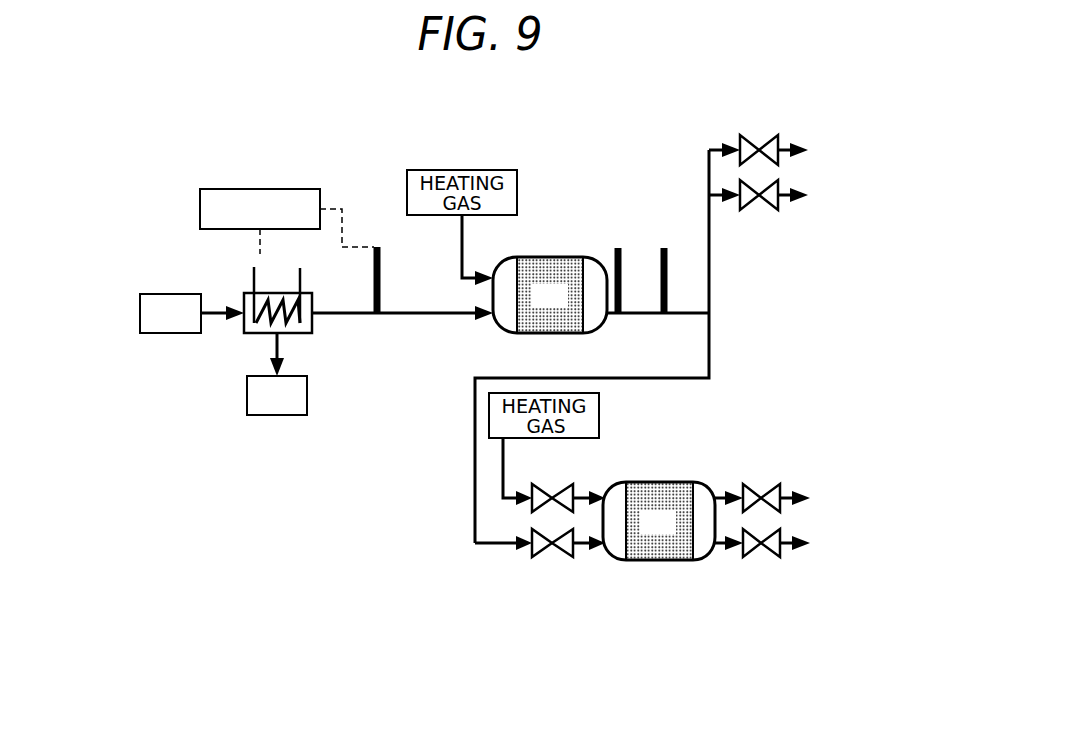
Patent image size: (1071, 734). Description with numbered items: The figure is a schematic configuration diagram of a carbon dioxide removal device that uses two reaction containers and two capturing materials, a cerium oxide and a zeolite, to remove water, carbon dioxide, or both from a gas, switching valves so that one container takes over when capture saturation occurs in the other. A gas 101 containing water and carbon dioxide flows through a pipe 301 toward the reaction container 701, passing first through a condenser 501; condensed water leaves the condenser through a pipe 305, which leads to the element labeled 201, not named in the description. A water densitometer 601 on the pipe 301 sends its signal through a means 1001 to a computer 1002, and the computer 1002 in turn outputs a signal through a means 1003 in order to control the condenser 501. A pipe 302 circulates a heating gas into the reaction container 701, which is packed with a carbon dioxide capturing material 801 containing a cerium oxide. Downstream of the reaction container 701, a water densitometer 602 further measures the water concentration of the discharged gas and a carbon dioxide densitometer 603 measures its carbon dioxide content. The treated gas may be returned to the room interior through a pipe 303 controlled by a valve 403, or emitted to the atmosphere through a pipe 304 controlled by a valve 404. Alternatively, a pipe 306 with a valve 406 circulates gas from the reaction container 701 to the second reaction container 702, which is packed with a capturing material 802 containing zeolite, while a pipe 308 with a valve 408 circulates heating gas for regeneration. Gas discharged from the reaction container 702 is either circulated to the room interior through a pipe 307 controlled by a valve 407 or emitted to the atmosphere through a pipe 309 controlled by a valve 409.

The gas 101 is at (192, 313).
The condensate discharge destination 201 is at (277, 395).
The pipe 301 is at (389, 318).
The pipe 302 is at (470, 276).
The pipe 303 is at (718, 200).
The pipe 304 is at (717, 147).
The pipe 305 is at (298, 354).
The pipe 306 is at (496, 547).
The pipe 307 is at (718, 548).
The pipe 308 is at (514, 494).
The pipe 309 is at (718, 495).
The valve 403 is at (765, 210).
The valve 404 is at (766, 135).
The valve 406 is at (560, 557).
The valve 407 is at (768, 557).
The valve 408 is at (562, 485).
The valve 409 is at (772, 485).
The condenser 501 is at (313, 291).
The H2O densitometer 601 is at (381, 265).
The H2O densitometer 602 is at (622, 265).
The CO2 densitometer 603 is at (668, 265).
The reaction container 701 is at (551, 257).
The reaction container 702 is at (660, 482).
The CO2 capturing material 801 is at (550, 295).
The capturing material 802 is at (659, 521).
The means for inputting a signal 1001 is at (331, 210).
The computer 1002 is at (245, 189).
The means for outputting a signal 1003 is at (254, 260).